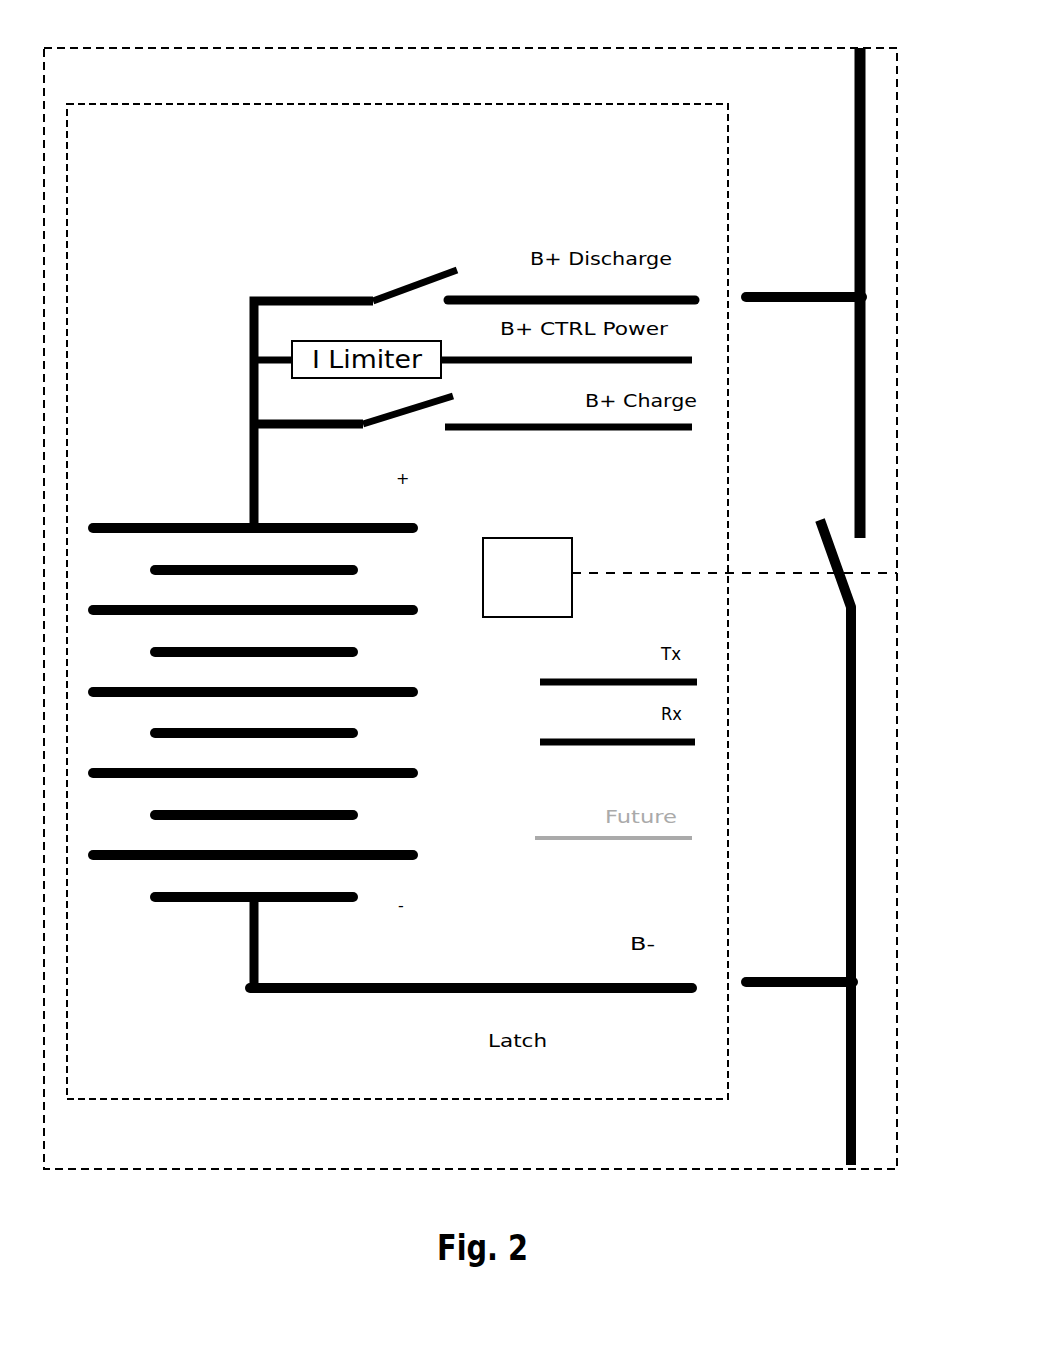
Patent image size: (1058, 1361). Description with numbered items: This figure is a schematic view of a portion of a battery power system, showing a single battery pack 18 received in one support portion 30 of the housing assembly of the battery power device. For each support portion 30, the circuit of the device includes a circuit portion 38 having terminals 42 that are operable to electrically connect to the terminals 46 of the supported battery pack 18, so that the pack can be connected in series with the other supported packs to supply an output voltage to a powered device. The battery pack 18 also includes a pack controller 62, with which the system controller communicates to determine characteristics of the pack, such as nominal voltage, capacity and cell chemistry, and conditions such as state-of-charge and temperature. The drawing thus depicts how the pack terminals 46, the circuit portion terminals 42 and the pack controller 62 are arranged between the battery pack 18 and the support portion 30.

The battery pack 18 is at (248, 1099).
The support portion 30 is at (773, 1170).
The circuit portion 38 is at (833, 255).
The terminals 42 is at (777, 303).
The terminals 46 is at (682, 297).
The pack controller 62 is at (690, 577).